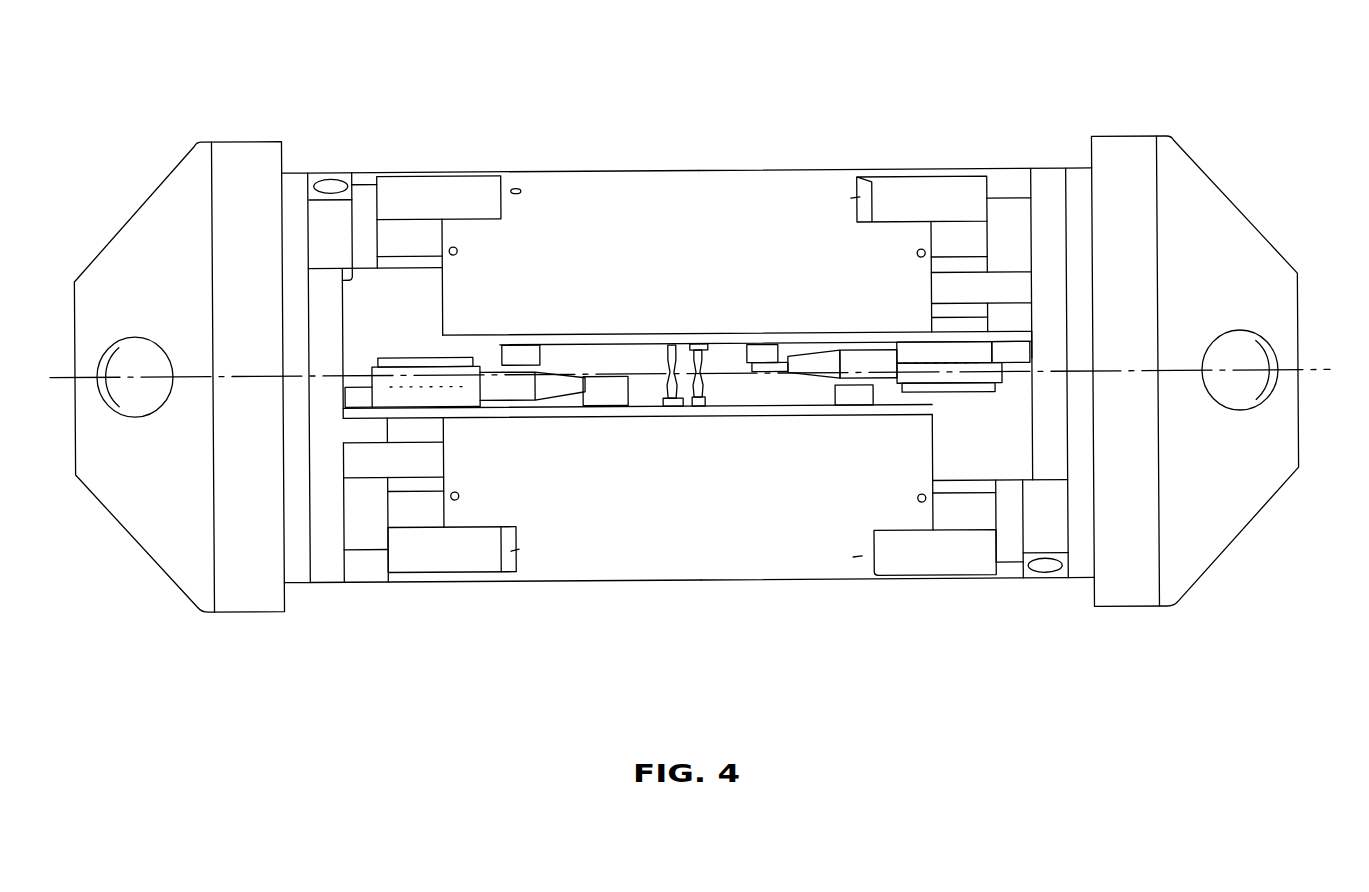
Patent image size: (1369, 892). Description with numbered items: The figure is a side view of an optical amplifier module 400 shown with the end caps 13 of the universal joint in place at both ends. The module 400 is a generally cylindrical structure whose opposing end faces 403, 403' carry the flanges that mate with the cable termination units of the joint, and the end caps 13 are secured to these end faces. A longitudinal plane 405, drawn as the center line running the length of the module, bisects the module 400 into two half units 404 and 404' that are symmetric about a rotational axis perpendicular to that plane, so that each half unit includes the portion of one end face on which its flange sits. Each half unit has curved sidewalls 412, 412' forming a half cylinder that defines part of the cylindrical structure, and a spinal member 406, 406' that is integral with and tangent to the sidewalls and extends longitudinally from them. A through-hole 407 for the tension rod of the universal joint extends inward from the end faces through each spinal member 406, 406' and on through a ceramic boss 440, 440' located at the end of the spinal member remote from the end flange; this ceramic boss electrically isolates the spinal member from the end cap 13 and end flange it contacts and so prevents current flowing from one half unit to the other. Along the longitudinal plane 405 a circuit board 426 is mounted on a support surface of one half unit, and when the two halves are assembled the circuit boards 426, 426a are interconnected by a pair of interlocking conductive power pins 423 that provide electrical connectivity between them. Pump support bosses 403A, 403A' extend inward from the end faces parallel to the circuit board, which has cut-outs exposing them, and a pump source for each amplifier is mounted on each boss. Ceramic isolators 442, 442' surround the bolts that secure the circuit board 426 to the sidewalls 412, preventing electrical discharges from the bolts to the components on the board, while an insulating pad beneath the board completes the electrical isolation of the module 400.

The end cap 13 is at (147, 551).
The optical amplifier module 400 is at (504, 667).
The end face 403 is at (374, 449).
The end face 403' is at (999, 337).
The pump support boss 403A is at (438, 472).
The pump support boss 403A' is at (908, 306).
The half unit 404 is at (884, 608).
The half unit 404' is at (503, 153).
The longitudinal plane 405 is at (1322, 374).
The spinal member 406 is at (692, 558).
The spinal member 406' is at (691, 227).
The through-hole 407 is at (397, 357).
The curved sidewall 412 is at (505, 598).
The curved sidewall 412' is at (881, 154).
The interlocking conductive power pin 423 is at (694, 353).
The circuit board 426 is at (648, 416).
The circuit board 426a is at (595, 334).
The ceramic boss 440 is at (1038, 557).
The ceramic boss 440' is at (332, 191).
The ceramic isolator 442 is at (873, 423).
The ceramic isolator 442' is at (501, 326).